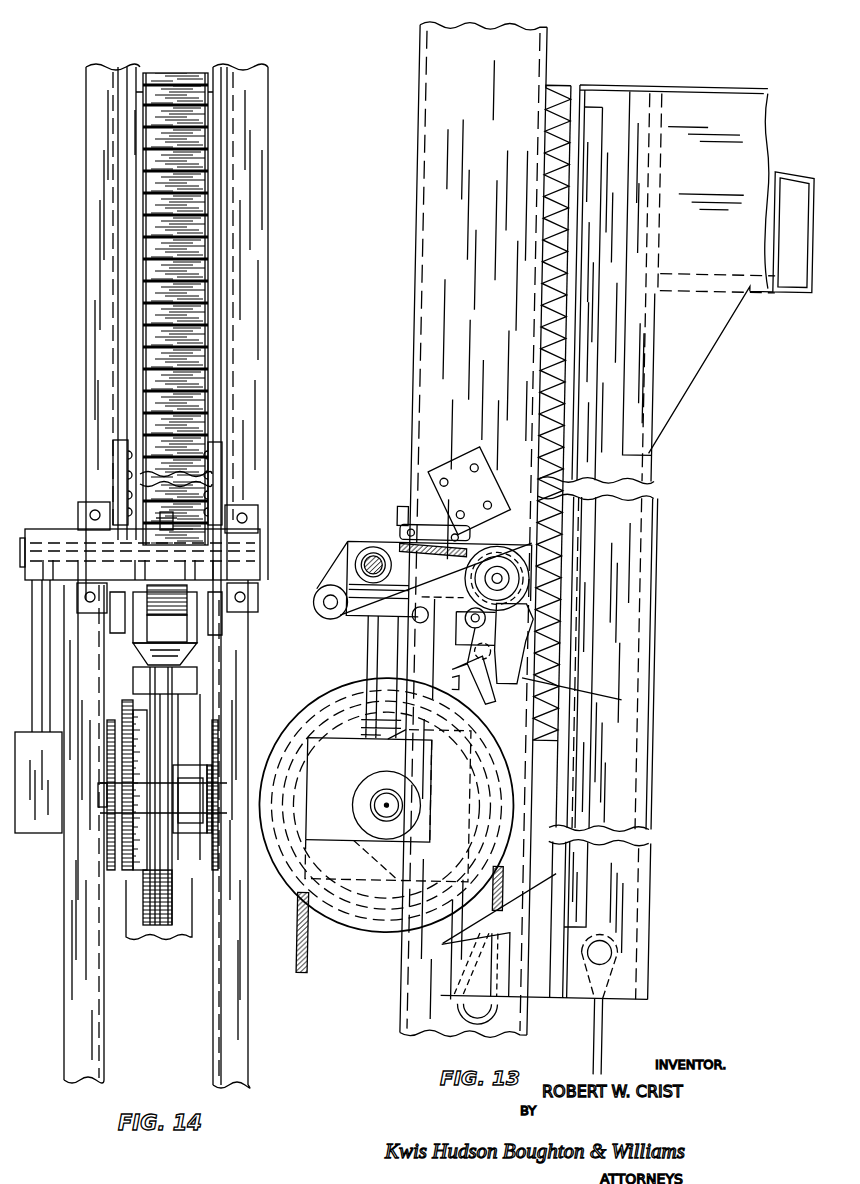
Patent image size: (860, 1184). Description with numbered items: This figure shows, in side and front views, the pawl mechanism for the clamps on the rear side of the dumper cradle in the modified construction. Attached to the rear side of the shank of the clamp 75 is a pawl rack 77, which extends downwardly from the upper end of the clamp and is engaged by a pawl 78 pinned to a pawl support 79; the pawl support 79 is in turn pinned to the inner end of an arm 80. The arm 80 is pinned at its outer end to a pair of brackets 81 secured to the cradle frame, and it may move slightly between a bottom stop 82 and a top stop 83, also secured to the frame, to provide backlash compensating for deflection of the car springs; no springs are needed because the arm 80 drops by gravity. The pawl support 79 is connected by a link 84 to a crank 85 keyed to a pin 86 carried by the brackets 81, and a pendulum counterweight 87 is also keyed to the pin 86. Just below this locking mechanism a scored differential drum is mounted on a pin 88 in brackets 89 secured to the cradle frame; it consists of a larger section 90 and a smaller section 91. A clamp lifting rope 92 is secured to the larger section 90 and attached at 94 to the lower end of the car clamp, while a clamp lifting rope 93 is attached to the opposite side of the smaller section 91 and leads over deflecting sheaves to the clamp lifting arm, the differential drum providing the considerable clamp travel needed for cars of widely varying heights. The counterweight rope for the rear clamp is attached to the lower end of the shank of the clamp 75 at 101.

In FIG. 13, the clamp 75 is at (702, 358).
In FIG. 14, the pawl rack 77 is at (200, 140).
In FIG. 13, the pawl rack 77 is at (560, 84).
In FIG. 14, the pawl 78 is at (190, 665).
In FIG. 13, the pawl 78 is at (462, 672).
In FIG. 13, the pawl support 79 is at (456, 580).
In FIG. 14, the arm 80 is at (120, 608).
In FIG. 13, the arm 80 is at (362, 548).
In FIG. 14, the bracket 81 is at (82, 512).
In FIG. 13, the bracket 81 is at (401, 508).
In FIG. 14, the bottom stop 82 is at (213, 623).
In FIG. 13, the bottom stop 82 is at (524, 619).
In FIG. 14, the top stop 83 is at (218, 492).
In FIG. 13, the top stop 83 is at (480, 505).
In FIG. 14, the link 84 is at (165, 614).
In FIG. 13, the link 84 is at (348, 622).
In FIG. 14, the crank 85 is at (125, 623).
In FIG. 13, the crank 85 is at (336, 590).
In FIG. 14, the pin 86 is at (262, 560).
In FIG. 13, the pin 86 is at (374, 555).
In FIG. 14, the pendulum counterweight 87 is at (36, 833).
In FIG. 13, the pendulum counterweight 87 is at (647, 616).
In FIG. 14, the pin 88 is at (100, 807).
In FIG. 13, the pin 88 is at (393, 802).
In FIG. 14, the bracket 89 is at (213, 755).
In FIG. 13, the bracket 89 is at (365, 762).
In FIG. 14, the larger section 90 is at (165, 937).
In FIG. 13, the larger section 90 is at (383, 937).
In FIG. 14, the smaller section 91 is at (122, 883).
In FIG. 13, the smaller section 91 is at (365, 872).
In FIG. 13, the clamp lifting rope 92 is at (500, 905).
In FIG. 13, the clamp lifting rope 93 is at (318, 953).
In FIG. 13, the attachment point 94 is at (487, 1000).
In FIG. 13, the attachment point 101 is at (611, 950).